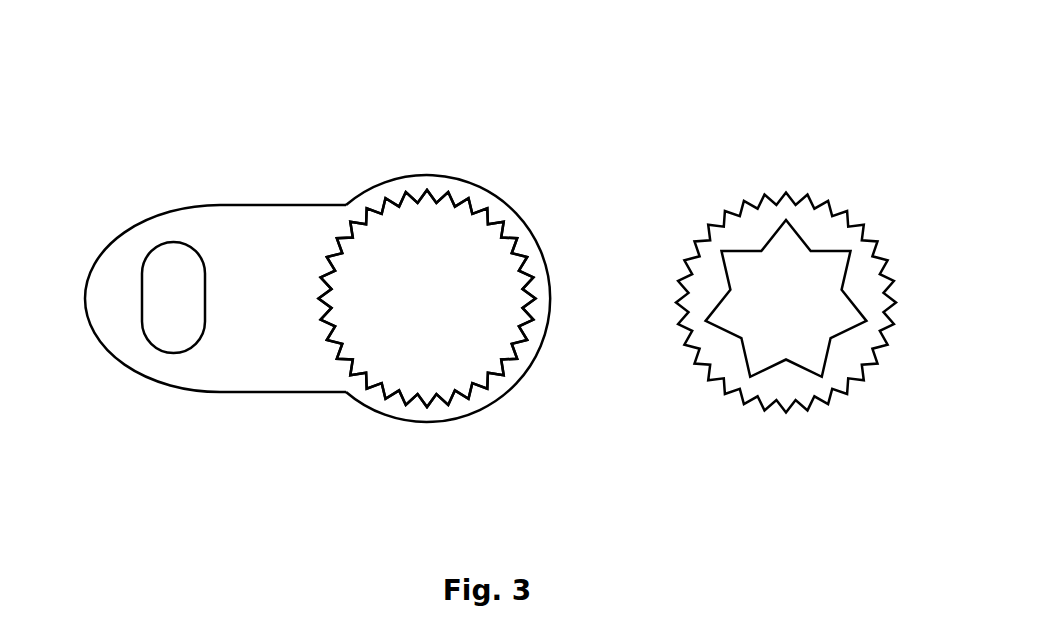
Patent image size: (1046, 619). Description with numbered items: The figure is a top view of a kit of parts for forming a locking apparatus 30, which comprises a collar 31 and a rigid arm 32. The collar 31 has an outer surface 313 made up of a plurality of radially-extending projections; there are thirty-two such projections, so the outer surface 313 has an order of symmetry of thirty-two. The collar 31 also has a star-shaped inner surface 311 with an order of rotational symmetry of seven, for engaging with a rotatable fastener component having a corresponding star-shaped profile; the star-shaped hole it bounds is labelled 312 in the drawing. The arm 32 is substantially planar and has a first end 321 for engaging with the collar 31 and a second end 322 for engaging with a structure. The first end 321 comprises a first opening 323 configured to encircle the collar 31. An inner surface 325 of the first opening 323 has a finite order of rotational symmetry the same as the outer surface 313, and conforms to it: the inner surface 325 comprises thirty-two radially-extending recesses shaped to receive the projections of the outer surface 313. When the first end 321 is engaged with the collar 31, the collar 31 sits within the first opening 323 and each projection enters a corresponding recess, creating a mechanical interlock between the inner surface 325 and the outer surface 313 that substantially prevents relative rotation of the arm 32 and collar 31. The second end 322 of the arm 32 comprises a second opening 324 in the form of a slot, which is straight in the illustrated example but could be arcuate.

The locking apparatus 30 is at (45, 120).
The collar 31 is at (863, 272).
The star-shaped inner surface 311 is at (843, 342).
The star-shaped hole 312 is at (773, 310).
The outer surface 313 is at (792, 200).
The rigid arm 32 is at (284, 245).
The first end 321 is at (556, 384).
The second end 322 is at (97, 380).
The first opening 323 is at (418, 315).
The second opening 324 is at (168, 263).
The inner surface 325 is at (510, 235).